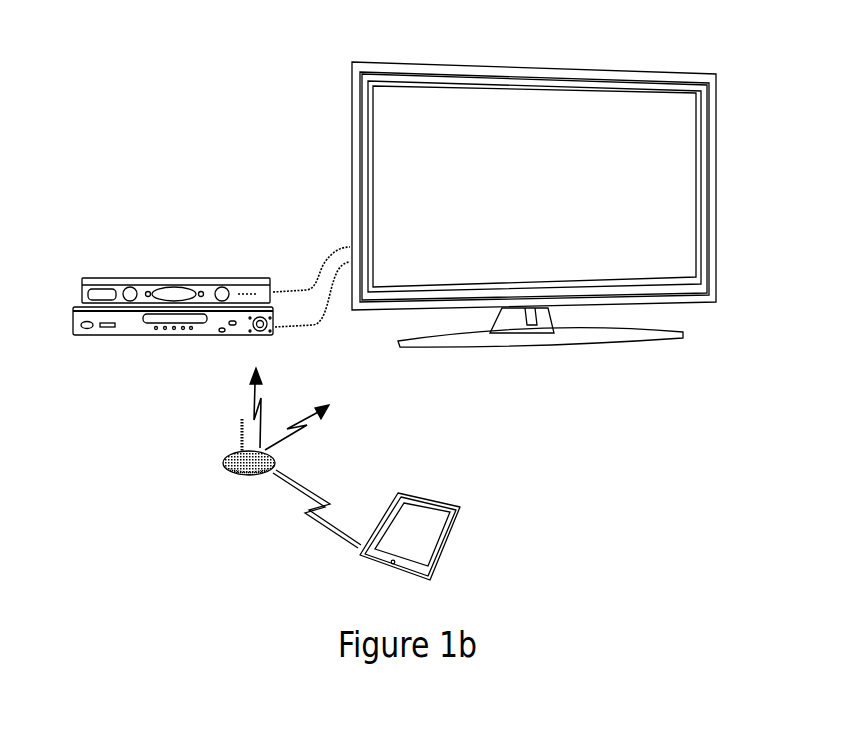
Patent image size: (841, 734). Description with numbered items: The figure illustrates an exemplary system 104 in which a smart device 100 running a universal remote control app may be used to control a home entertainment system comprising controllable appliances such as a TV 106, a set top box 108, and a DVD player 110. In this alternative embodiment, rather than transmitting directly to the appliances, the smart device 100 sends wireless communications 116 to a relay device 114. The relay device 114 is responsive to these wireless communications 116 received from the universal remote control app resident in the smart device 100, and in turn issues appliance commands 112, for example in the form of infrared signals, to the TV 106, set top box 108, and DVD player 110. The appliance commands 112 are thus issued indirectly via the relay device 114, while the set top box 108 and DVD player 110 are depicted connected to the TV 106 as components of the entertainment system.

The smart device 100 is at (407, 573).
The exemplary system 104 is at (115, 590).
The TV 106 is at (633, 72).
The set top box 108 is at (212, 277).
The DVD player 110 is at (157, 336).
The appliance commands 112 is at (253, 393).
The relay device 114 is at (243, 480).
The wireless communications 116 is at (323, 527).